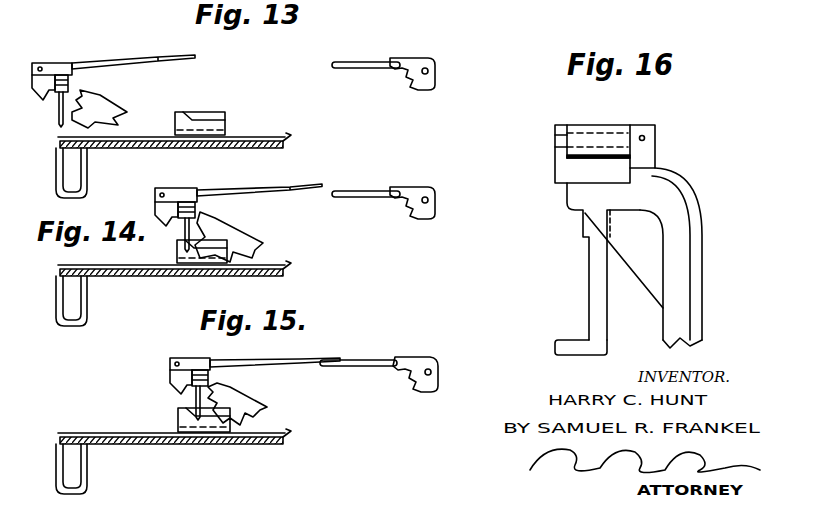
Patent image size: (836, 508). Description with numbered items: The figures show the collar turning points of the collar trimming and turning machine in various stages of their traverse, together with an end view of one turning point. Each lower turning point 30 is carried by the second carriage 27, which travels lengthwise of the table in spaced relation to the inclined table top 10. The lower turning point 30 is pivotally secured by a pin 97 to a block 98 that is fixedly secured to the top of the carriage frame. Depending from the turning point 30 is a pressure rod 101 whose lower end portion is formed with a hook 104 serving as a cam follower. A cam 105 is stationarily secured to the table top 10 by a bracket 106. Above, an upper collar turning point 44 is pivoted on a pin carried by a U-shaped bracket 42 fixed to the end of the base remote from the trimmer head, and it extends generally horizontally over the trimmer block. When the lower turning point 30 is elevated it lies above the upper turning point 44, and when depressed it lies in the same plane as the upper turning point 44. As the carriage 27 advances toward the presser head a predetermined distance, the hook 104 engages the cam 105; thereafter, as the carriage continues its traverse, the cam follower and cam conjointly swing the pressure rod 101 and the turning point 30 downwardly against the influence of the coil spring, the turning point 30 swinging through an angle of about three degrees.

In FIG. 13, the table top 10 is at (268, 137).
In FIG. 14, the table top 10 is at (285, 265).
In FIG. 15, the table top 10 is at (296, 438).
In FIG. 13, the second carriage 27 is at (97, 105).
In FIG. 14, the second carriage 27 is at (217, 222).
In FIG. 15, the second carriage 27 is at (230, 397).
In FIG. 16, the second carriage 27 is at (683, 254).
In FIG. 13, the lower turning point 30 is at (121, 60).
In FIG. 14, the lower turning point 30 is at (282, 188).
In FIG. 15, the lower turning point 30 is at (264, 360).
In FIG. 16, the lower turning point 30 is at (588, 125).
In FIG. 13, the U-shaped bracket 42 is at (432, 78).
In FIG. 14, the U-shaped bracket 42 is at (432, 205).
In FIG. 15, the U-shaped bracket 42 is at (437, 385).
In FIG. 13, the upper collar turning point 44 is at (351, 62).
In FIG. 14, the upper collar turning point 44 is at (365, 191).
In FIG. 15, the upper collar turning point 44 is at (366, 360).
In FIG. 16, the pin 97 is at (615, 132).
In FIG. 16, the block 98 is at (562, 168).
In FIG. 13, the pressure rod 101 is at (55, 107).
In FIG. 14, the pressure rod 101 is at (184, 236).
In FIG. 15, the pressure rod 101 is at (192, 397).
In FIG. 16, the pressure rod 101 is at (593, 273).
In FIG. 16, the hook 104 is at (567, 343).
In FIG. 13, the cam 105 is at (212, 112).
In FIG. 14, the cam 105 is at (230, 243).
In FIG. 15, the cam 105 is at (232, 416).
In FIG. 13, the bracket 106 is at (175, 125).
In FIG. 14, the bracket 106 is at (177, 256).
In FIG. 15, the bracket 106 is at (178, 423).